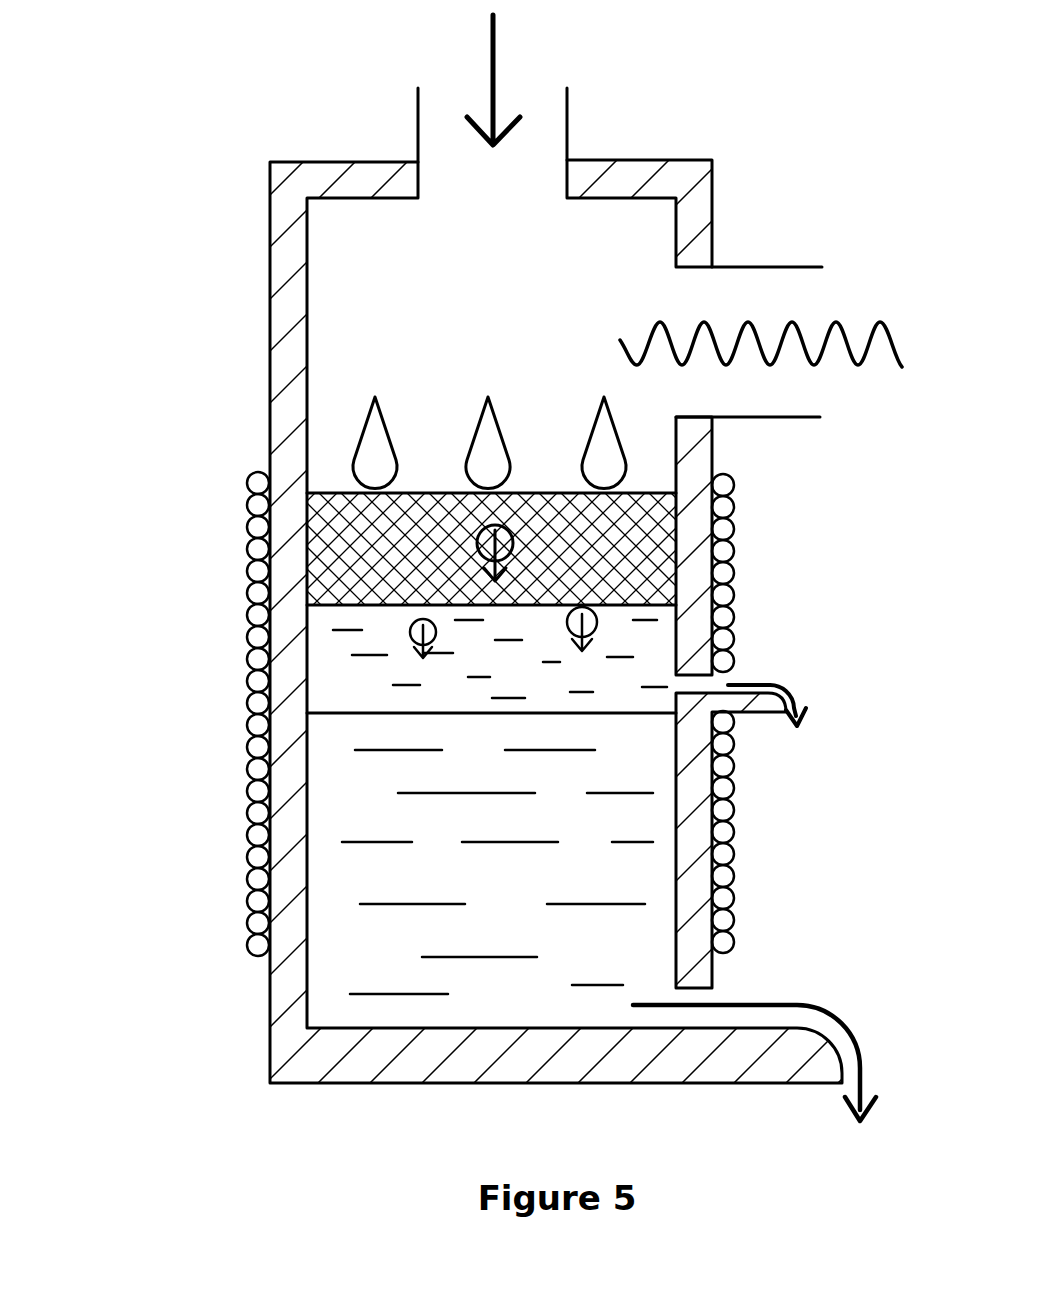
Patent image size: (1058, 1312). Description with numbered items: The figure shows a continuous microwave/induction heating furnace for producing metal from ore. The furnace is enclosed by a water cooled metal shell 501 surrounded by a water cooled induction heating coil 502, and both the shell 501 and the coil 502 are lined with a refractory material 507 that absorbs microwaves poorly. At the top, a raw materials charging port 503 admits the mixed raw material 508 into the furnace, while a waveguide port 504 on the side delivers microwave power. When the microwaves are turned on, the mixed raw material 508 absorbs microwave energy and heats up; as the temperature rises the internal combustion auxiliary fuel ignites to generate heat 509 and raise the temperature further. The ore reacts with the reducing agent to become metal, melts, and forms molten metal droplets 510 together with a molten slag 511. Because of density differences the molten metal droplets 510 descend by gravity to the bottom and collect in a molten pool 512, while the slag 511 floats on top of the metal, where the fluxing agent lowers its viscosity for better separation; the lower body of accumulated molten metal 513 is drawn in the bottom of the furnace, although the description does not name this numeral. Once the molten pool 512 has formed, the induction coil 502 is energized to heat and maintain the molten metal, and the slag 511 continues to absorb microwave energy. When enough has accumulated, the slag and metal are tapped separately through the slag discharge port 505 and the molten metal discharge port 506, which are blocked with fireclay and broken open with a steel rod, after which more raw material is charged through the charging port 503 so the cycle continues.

The water cooled metal shell 501 is at (270, 275).
The water cooled induction heating coil 502 is at (245, 830).
The raw materials charging port 503 is at (518, 147).
The waveguide port 504 is at (722, 290).
The slag discharge port 505 is at (713, 690).
The molten metal discharge port 506 is at (382, 700).
The refractory material 507 is at (290, 362).
The mixed raw material 508 is at (360, 540).
The heat 509 is at (488, 470).
The molten metal droplets 510 is at (612, 280).
The molten slag 511 is at (500, 532).
The molten pool 512 is at (647, 650).
The liquid reservoir 513 is at (425, 957).